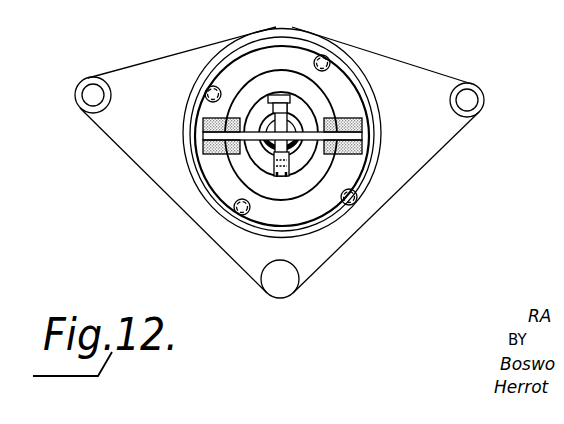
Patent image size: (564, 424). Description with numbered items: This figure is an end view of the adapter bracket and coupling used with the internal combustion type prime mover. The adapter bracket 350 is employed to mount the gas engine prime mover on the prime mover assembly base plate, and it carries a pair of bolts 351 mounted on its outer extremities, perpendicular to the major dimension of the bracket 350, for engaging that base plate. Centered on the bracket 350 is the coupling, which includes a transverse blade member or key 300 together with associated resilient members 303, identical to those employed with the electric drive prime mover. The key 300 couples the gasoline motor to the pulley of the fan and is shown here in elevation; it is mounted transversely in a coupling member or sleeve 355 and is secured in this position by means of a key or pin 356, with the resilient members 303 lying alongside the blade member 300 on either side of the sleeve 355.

The key 300 is at (328, 120).
The resilient members 303 is at (205, 147).
The adapter bracket 350 is at (387, 188).
The bolts 351 is at (86, 86).
The coupling member or sleeve 355 is at (255, 112).
The key or pin 356 is at (284, 97).